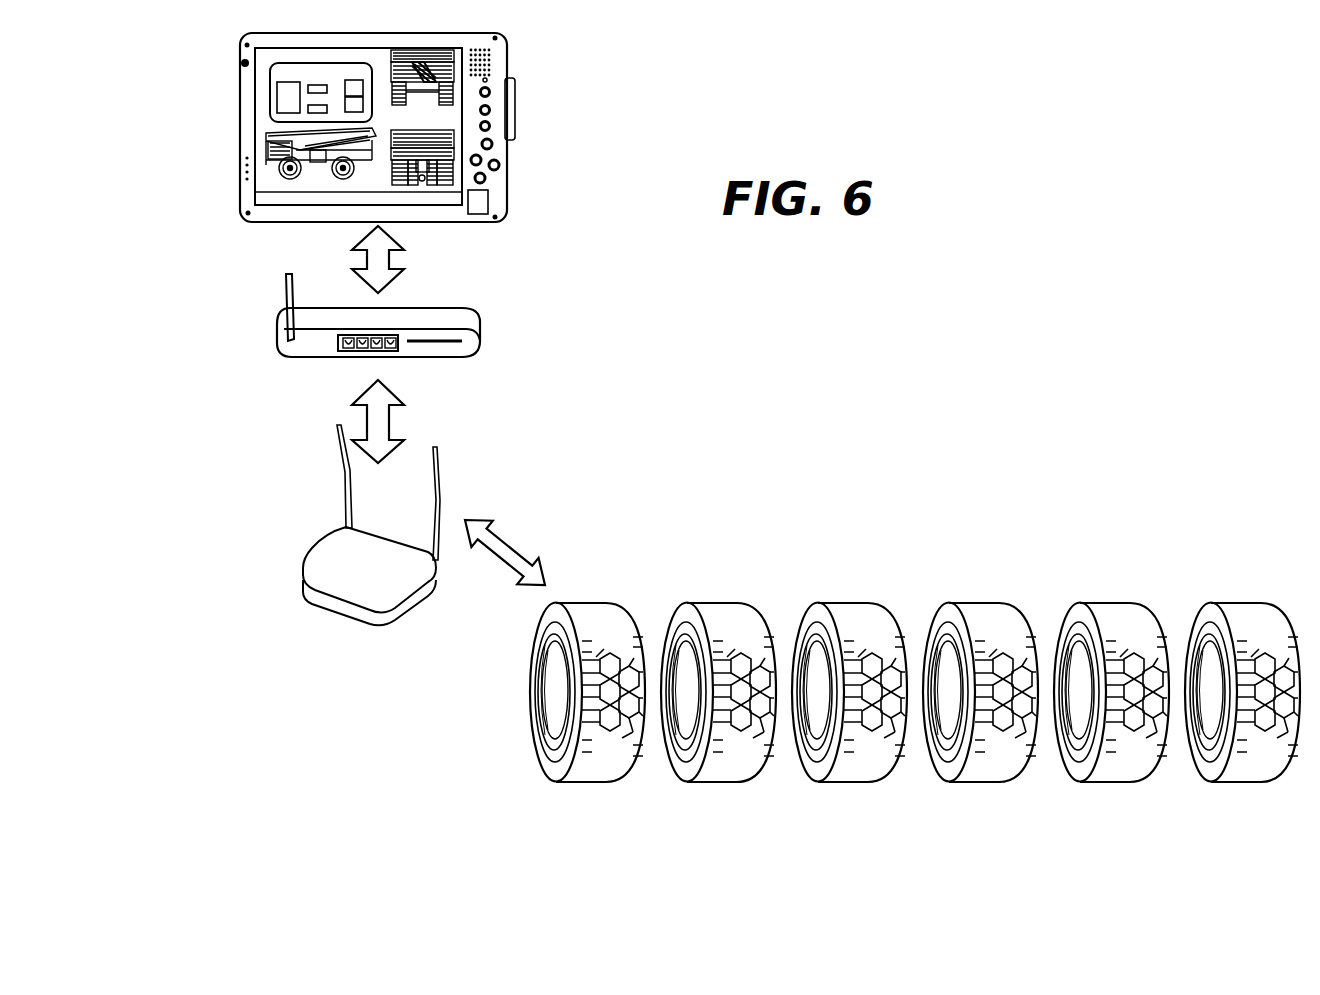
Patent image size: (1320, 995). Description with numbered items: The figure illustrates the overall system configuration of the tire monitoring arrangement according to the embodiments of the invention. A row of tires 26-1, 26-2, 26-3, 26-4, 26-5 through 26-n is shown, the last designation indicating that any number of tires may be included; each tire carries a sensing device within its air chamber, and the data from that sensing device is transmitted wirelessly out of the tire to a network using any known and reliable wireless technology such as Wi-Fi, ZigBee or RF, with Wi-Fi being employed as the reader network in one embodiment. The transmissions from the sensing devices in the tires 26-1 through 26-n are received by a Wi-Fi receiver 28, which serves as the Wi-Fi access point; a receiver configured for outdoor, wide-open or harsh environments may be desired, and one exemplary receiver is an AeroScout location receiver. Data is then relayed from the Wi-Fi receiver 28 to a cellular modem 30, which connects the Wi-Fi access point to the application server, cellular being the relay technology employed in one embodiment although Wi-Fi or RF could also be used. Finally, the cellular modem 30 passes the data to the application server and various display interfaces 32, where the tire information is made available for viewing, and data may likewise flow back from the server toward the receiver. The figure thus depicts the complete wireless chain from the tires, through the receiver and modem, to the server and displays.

The tire 26-1 is at (586, 600).
The tire 26-2 is at (713, 603).
The tire 26-3 is at (838, 603).
The tire 26-4 is at (985, 602).
The tire 26-5 is at (1103, 600).
The tire 26-n is at (1227, 603).
The Wi-Fi receiver 28 is at (290, 563).
The cellular modem 30 is at (267, 350).
The display interfaces 32 is at (237, 125).